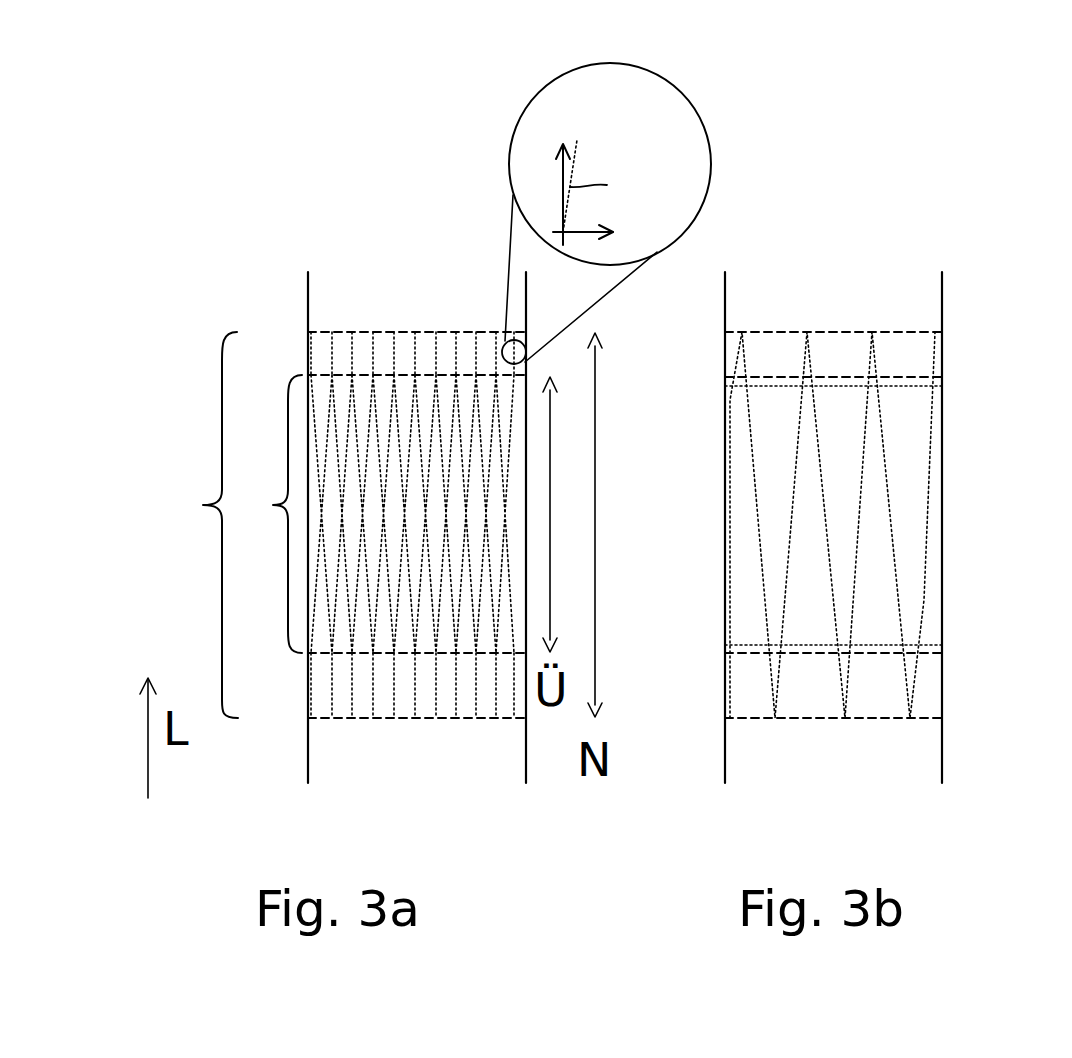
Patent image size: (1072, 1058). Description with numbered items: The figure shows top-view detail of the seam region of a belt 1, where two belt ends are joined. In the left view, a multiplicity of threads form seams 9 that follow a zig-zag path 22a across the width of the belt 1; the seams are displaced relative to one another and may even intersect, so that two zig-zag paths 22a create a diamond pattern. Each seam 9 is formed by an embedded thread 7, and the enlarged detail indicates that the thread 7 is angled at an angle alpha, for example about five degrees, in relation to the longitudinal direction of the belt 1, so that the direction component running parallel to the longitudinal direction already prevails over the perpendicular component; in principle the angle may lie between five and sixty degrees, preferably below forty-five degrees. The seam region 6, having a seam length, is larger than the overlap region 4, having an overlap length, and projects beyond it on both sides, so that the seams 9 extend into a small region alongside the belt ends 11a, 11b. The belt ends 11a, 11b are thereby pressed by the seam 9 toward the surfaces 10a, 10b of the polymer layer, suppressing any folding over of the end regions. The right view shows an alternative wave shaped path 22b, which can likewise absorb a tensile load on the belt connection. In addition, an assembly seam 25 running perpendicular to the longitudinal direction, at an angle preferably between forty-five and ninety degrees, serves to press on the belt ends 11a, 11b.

In FIG. 3A, the belt 1 is at (426, 800).
In FIG. 3B, the belt 1 is at (856, 800).
In FIG. 3A, the overlap region 4 is at (268, 514).
In FIG. 3A, the seam region 6 is at (200, 525).
In FIG. 3A, the embedded thread 7 is at (578, 160).
In FIG. 3A, the seam 9 is at (305, 352).
In FIG. 3B, the seam 9 is at (930, 490).
In FIG. 3B, the surface of the polymer layer 10a is at (903, 352).
In FIG. 3B, the surface of the polymer layer 10b is at (925, 690).
In FIG. 3B, the belt end 11a is at (775, 372).
In FIG. 3B, the belt end 11b is at (750, 657).
In FIG. 3A, the zig-zag path 22a is at (452, 312).
In FIG. 3B, the wave shaped path 22b is at (820, 310).
In FIG. 3B, the assembly seam 25 is at (812, 645).